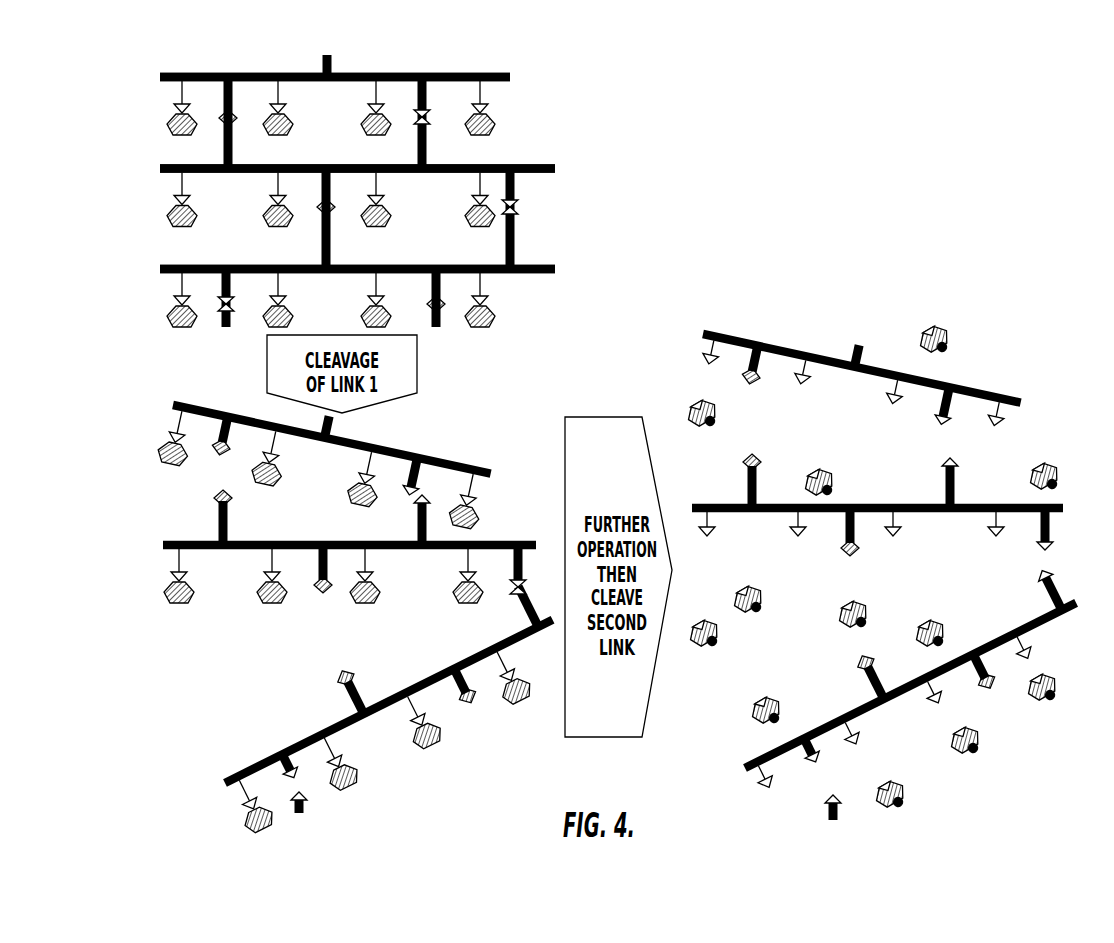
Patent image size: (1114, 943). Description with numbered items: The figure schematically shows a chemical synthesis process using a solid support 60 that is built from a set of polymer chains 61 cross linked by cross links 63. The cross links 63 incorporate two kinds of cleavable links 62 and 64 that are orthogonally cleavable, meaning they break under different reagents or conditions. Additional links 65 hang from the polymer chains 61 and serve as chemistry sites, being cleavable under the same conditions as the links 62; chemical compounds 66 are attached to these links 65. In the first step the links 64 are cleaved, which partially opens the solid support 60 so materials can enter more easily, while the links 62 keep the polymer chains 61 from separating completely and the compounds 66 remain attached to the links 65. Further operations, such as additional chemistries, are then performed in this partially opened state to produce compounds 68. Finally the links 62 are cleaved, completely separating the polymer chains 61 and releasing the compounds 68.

The solid support 60 is at (524, 60).
The polymer chains 61 is at (384, 73).
The cleavable links 62 is at (430, 114).
The cross links 63 is at (233, 156).
The cleavable links 64 is at (238, 117).
The links 65 is at (290, 105).
The chemical compounds 66 is at (270, 313).
The compounds 68 is at (951, 337).